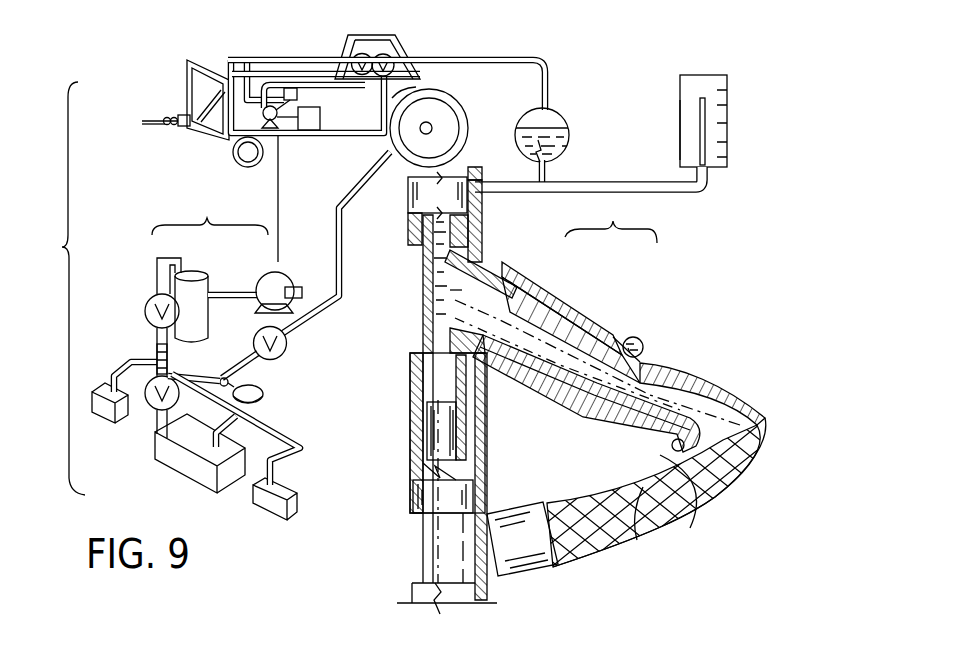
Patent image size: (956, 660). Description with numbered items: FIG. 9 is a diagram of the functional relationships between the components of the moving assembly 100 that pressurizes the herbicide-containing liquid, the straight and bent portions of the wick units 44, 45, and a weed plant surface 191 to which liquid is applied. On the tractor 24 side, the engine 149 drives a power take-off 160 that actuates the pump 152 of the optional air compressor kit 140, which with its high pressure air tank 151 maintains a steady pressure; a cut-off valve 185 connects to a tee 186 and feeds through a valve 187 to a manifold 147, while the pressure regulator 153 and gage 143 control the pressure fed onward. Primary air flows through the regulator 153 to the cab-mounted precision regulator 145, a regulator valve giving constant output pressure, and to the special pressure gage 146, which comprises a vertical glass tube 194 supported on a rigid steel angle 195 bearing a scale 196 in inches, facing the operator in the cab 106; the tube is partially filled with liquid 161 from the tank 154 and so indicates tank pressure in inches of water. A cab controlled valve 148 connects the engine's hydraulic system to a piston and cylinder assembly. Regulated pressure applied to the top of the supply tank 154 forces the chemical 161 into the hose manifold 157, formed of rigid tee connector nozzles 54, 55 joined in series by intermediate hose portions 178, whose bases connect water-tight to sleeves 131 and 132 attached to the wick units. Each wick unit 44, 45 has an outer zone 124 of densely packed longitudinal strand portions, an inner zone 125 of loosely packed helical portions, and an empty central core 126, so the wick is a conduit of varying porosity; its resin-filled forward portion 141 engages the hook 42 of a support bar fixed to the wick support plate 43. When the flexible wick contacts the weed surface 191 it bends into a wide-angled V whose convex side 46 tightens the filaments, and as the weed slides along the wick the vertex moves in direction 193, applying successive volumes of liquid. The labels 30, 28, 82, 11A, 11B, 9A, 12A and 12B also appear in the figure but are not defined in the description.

The assembly 100 is at (56, 288).
The workpiece 30 is at (160, 120).
The workpiece holder 28 is at (182, 138).
The control panel 82 is at (215, 68).
The cab 106 is at (366, 33).
The cab controlled valve 148 is at (352, 54).
The precision regulator 145 is at (405, 60).
The tractor 24 is at (440, 88).
The engine 149 is at (320, 118).
The herbicide liquid supply tank 154 is at (554, 118).
The chemical 161 is at (553, 147).
The pressure gage 146 is at (703, 83).
The scale 196 is at (728, 92).
The vertical glass tube 194 is at (700, 115).
The vertical rigid steel angle 195 is at (681, 147).
The power take-off 160 is at (278, 203).
The air compressor kit 140 is at (210, 215).
The air tank 151 is at (188, 271).
The pump 152 is at (274, 277).
The cut-off valve 185 is at (152, 297).
The tee 186 is at (157, 352).
The pressure regulator 153 is at (287, 347).
The gage 143 is at (264, 402).
The valve 187 is at (150, 402).
The manifold 147 is at (193, 467).
The hose manifold 157 is at (412, 222).
The connector nozzle 55 is at (482, 262).
The sleeve 131 is at (537, 280).
The wick unit 45 is at (611, 219).
The inner zone 125 is at (548, 338).
The outer zone 124 is at (570, 333).
The direction of vertex movement 193 is at (590, 316).
The weed plant surface 191 is at (630, 336).
The section line 11B is at (641, 337).
The drum shell 11A is at (641, 366).
The central core 126 is at (540, 353).
The intermediate hose portion 178 is at (410, 430).
The section arrow 9A is at (550, 401).
The lower chute wall 12A is at (606, 431).
The section arrow 12B is at (598, 448).
The convex side 46 is at (608, 418).
The wick support plate 43 is at (487, 515).
The connector nozzle 54 is at (450, 540).
The sleeve 132 is at (515, 562).
The wick unit 44 is at (604, 527).
The hook 42 is at (618, 522).
The forward portion 141 is at (688, 532).